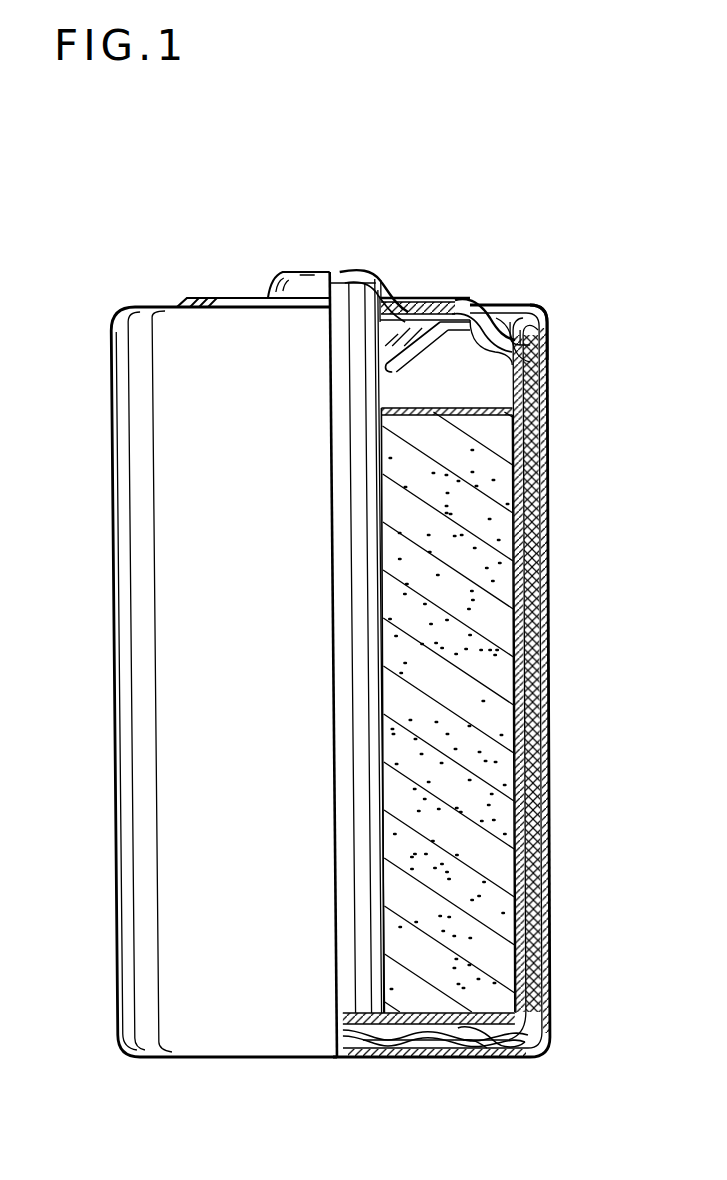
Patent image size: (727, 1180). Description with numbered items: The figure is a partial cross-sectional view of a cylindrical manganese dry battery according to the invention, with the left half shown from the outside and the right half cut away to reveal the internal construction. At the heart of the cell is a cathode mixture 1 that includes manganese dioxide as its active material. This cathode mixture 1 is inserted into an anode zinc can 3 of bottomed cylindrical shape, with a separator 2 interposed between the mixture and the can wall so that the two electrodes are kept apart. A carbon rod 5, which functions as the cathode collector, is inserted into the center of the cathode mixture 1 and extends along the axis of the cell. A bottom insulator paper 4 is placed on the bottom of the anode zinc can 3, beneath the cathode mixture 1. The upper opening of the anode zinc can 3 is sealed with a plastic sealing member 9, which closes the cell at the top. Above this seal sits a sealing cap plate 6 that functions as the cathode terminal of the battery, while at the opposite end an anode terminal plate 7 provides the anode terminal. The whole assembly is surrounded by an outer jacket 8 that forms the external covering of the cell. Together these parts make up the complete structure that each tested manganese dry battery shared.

The cathode mixture 1 is at (483, 510).
The separator 2 is at (537, 598).
The anode zinc can 3 is at (533, 690).
The bottom insulator paper 4 is at (448, 1050).
The carbon rod 5 is at (358, 282).
The sealing cap plate 6 is at (444, 312).
The anode terminal plate 7 is at (478, 1053).
The outer jacket 8 is at (543, 822).
The plastic sealing member 9 is at (547, 361).